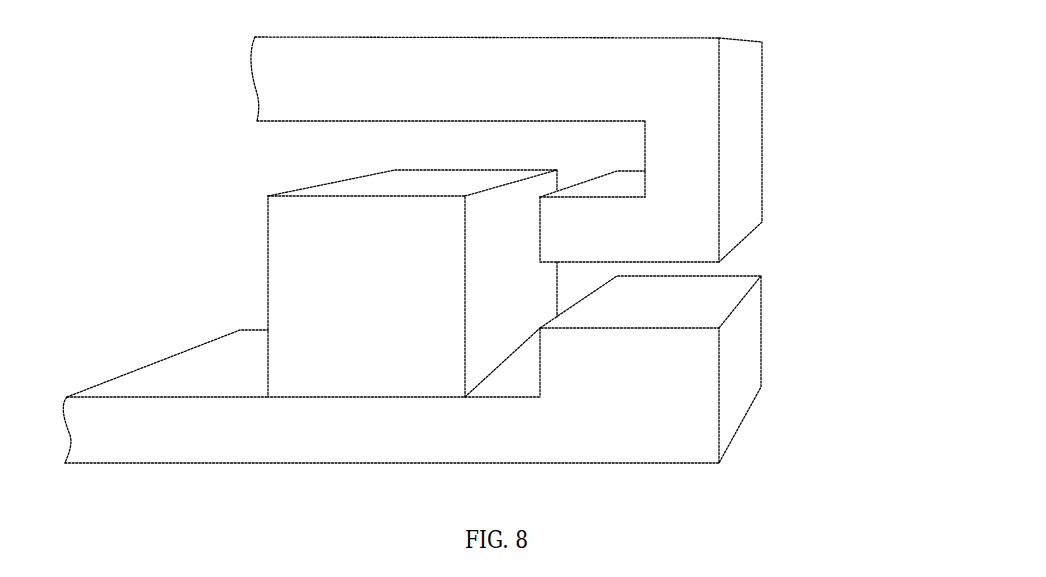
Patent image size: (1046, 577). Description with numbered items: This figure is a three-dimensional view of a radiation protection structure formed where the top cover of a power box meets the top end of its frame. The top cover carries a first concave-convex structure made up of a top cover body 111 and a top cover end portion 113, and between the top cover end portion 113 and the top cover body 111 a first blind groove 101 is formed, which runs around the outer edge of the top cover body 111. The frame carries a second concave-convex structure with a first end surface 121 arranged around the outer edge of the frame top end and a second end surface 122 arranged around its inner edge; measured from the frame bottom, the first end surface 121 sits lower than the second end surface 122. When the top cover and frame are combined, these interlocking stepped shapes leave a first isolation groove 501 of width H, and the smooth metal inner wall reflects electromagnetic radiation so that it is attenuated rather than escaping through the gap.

The first blind groove 101 is at (586, 149).
The top cover body 111 is at (487, 80).
The top cover end portion 113 is at (582, 235).
The first end surface 121 is at (647, 320).
The second end surface 122 is at (422, 182).
The first isolation groove 501 is at (449, 148).